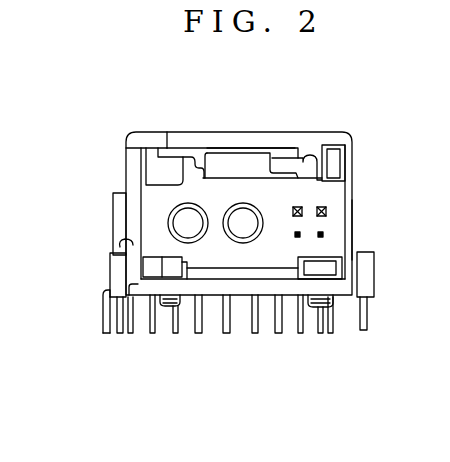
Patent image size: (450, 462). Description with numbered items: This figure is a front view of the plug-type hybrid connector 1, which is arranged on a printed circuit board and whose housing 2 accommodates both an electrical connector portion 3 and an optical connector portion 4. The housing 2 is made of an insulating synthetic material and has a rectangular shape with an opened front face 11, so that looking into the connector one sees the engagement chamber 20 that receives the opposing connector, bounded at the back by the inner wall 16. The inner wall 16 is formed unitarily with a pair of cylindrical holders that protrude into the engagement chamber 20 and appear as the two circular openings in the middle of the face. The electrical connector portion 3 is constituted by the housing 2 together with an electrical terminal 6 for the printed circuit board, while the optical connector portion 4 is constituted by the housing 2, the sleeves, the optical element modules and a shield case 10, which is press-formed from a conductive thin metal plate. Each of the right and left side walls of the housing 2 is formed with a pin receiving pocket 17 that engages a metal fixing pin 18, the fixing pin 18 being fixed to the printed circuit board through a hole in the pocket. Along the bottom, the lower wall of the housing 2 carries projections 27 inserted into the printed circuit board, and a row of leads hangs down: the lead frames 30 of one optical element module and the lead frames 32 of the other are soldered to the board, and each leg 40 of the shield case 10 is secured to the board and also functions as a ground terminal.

The hybrid connector 1 is at (328, 104).
The housing 2 is at (346, 130).
The electrical connector portion 3 is at (333, 224).
The optical connector portion 4 is at (162, 205).
The electrical terminal 6 is at (321, 323).
The shield case 10 is at (118, 214).
The opened front face 11 is at (354, 228).
The inner wall 16 is at (255, 142).
The pin receiving pocket 17 is at (110, 270).
The fixing pin 18 is at (119, 332).
The engagement chamber 20 is at (114, 244).
The projection 27 is at (166, 312).
The lead frame 30 is at (272, 326).
The lead frame 32 is at (182, 328).
The leg 40 is at (103, 318).